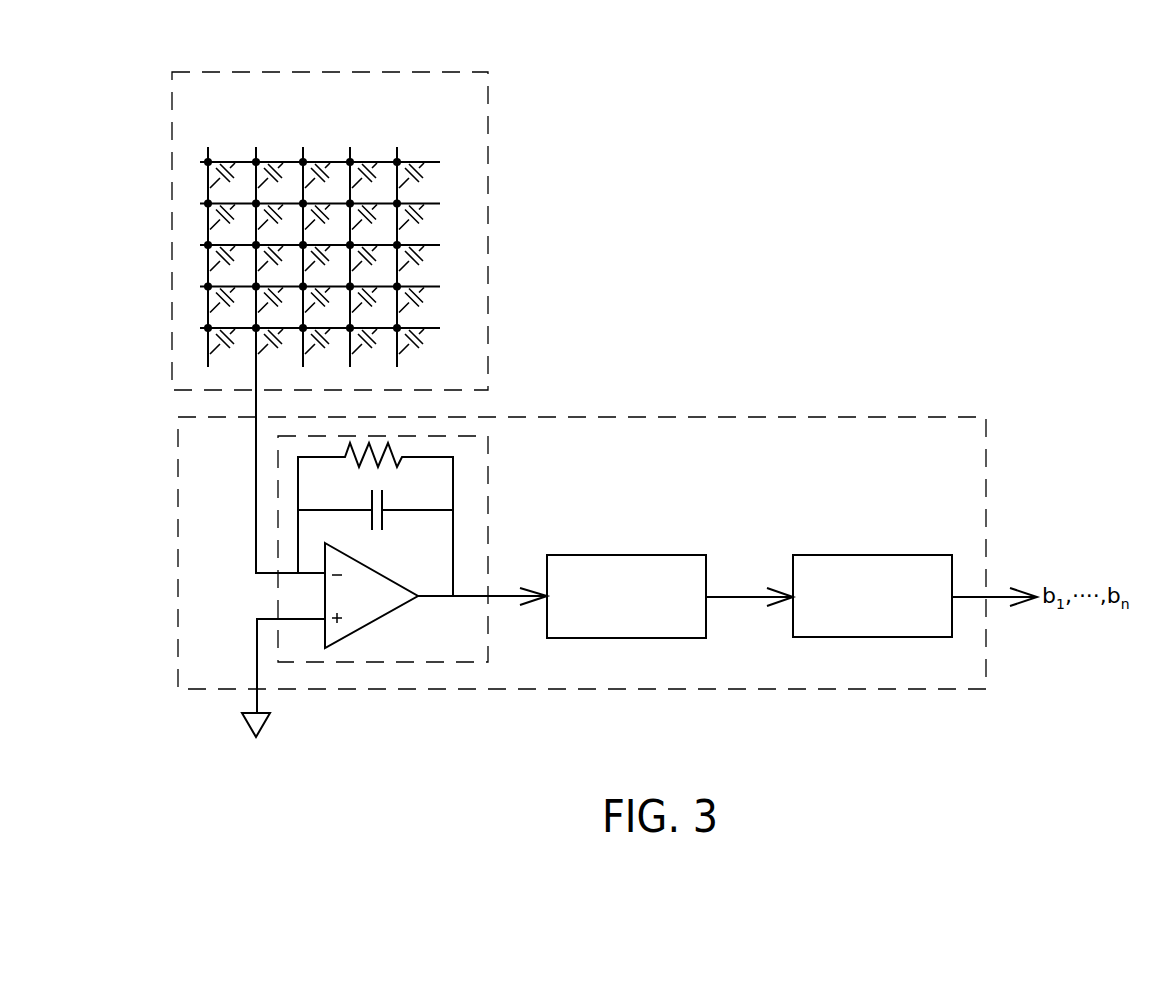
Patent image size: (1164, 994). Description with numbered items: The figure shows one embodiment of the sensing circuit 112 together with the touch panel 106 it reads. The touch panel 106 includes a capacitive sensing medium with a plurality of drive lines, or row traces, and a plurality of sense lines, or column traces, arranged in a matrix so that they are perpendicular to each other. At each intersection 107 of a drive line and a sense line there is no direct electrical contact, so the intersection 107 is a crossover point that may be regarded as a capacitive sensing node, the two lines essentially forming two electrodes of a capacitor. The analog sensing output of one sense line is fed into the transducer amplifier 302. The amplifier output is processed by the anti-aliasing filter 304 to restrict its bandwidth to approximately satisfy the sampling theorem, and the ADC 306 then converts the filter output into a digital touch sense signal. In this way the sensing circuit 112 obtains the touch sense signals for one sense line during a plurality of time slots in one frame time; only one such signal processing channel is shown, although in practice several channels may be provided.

The touch panel 106 is at (350, 212).
The intersection 107 is at (400, 160).
The sensing circuit 112 is at (607, 558).
The transducer amplifier 302 is at (488, 502).
The anti-aliasing filter (AAF) 304 is at (660, 555).
The ADC 306 is at (905, 555).